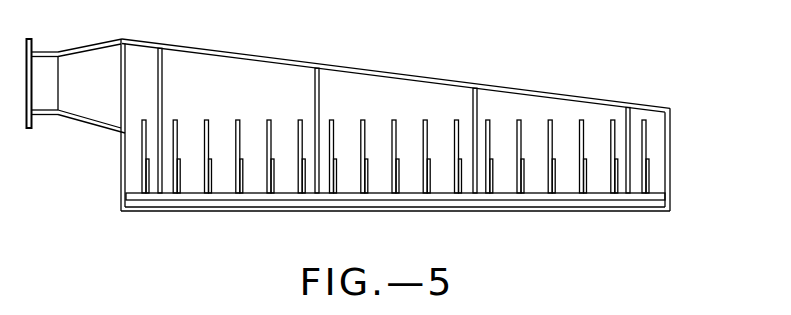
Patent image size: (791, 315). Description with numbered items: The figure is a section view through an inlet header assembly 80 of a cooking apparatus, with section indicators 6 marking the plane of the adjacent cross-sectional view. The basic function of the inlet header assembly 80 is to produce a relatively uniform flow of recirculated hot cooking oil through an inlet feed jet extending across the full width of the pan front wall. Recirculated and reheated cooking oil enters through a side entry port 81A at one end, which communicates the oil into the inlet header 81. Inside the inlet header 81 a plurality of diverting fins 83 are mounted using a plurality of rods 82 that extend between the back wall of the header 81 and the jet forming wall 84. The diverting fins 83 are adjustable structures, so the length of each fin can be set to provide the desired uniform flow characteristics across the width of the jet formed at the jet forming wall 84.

The inlet header assembly 80 is at (352, 125).
The inlet header 81 is at (258, 75).
The side entry port 81A is at (97, 63).
The rods 82 is at (164, 62).
The diverting fins 83 is at (393, 118).
The jet forming wall 84 is at (590, 203).
The section line 6- 6 is at (150, 220).